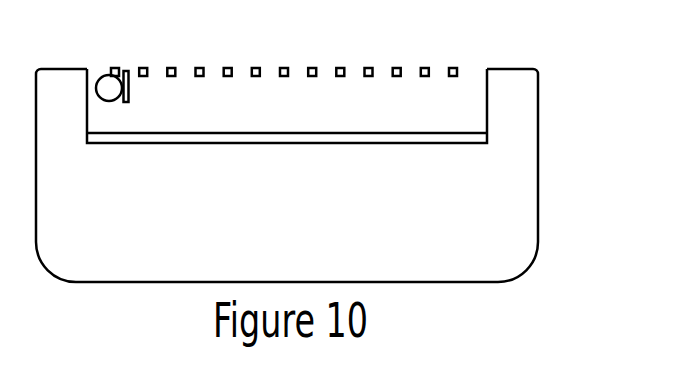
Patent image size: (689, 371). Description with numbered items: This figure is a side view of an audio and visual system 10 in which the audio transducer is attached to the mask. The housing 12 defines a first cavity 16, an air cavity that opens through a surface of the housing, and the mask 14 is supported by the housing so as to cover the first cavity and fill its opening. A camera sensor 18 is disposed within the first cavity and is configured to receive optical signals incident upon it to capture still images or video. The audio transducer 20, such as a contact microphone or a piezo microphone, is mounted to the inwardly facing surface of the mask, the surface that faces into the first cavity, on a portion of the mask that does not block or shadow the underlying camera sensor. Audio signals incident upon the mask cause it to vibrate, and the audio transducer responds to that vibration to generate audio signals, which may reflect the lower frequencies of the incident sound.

The audio and visual system 10 is at (545, 48).
The housing 12 is at (525, 90).
The mask 14 is at (368, 66).
The first cavity 16 is at (447, 110).
The camera sensor 18 is at (353, 138).
The audio transducer 20 is at (104, 88).